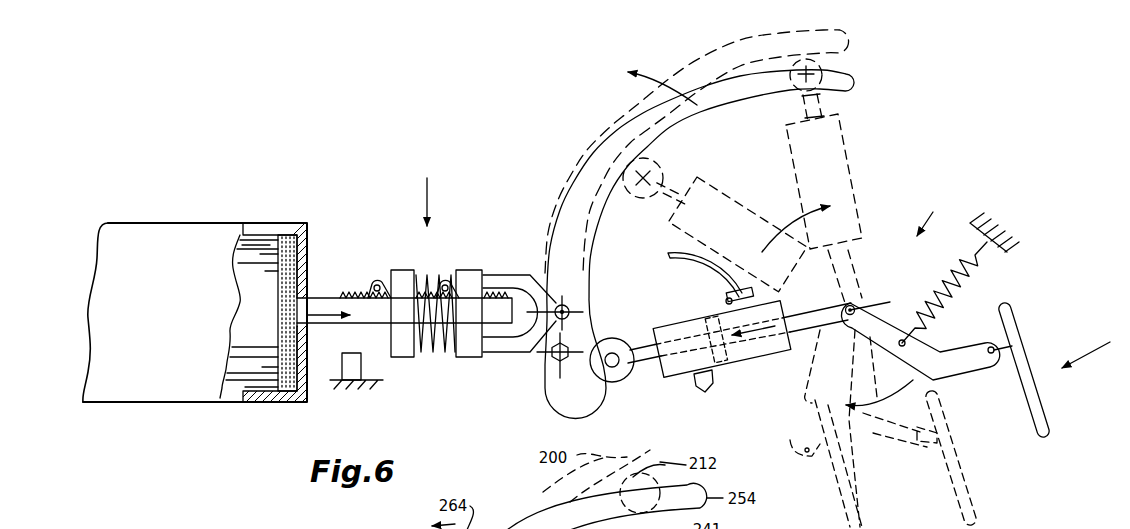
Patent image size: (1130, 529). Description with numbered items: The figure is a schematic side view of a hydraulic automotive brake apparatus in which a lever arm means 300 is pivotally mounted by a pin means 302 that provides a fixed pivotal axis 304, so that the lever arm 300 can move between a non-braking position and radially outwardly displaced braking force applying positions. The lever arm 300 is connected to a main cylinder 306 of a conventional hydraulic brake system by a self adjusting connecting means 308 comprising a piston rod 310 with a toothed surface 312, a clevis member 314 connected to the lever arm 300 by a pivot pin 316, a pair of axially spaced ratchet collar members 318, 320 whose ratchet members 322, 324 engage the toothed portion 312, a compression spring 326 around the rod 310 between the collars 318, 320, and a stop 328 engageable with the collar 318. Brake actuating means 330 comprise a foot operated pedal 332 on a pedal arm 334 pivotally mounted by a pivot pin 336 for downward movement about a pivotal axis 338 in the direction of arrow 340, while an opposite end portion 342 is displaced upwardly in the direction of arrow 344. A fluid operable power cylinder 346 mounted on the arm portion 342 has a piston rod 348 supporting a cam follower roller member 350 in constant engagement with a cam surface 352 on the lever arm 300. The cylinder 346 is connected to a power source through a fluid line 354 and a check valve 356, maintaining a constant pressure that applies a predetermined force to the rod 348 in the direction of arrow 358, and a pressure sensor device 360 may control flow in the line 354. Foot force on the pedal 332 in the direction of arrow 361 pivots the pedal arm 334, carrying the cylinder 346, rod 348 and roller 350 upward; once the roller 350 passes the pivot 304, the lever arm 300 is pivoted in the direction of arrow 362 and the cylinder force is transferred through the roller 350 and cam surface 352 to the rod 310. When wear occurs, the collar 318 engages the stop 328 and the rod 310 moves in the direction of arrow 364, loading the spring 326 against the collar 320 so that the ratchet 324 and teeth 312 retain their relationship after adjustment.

The lever arm means 300 is at (600, 138).
The pin means 302 is at (545, 368).
The fixed pivotal axis 304 is at (545, 385).
The main cylinder 306 is at (258, 223).
The self adjusting connecting means 308 is at (418, 190).
The piston rod 310 is at (322, 297).
The toothed surface 312 is at (355, 297).
The clevis member 314 is at (521, 278).
The pivot pin 316 is at (569, 308).
The ratchet collar member 318 is at (404, 352).
The ratchet collar member 320 is at (476, 352).
The ratchet member 322 is at (378, 281).
The ratchet member 324 is at (446, 281).
The compression spring 326 is at (440, 355).
The stop 328 is at (353, 366).
The brake actuating means 330 is at (920, 286).
The foot operated pedal 332 is at (1010, 333).
The pedal arm 334 is at (883, 327).
The pivot pin 336 is at (871, 390).
The pivotal axis 338 is at (858, 304).
The arrow 340 is at (893, 394).
The opposite end portion 342 is at (788, 393).
The arrow 344 is at (794, 218).
The fluid operable power cylinder 346 is at (738, 352).
The piston rod 348 is at (645, 364).
The cam follower roller member 350 is at (611, 338).
The cam surface 352 is at (593, 254).
The fluid line 354 is at (720, 272).
The check valve 356 is at (750, 292).
The arrow 358 is at (756, 340).
The pressure sensor device 360 is at (700, 392).
The arrow 361 is at (1088, 362).
The arrow 362 is at (640, 85).
The arrow 364 is at (333, 326).